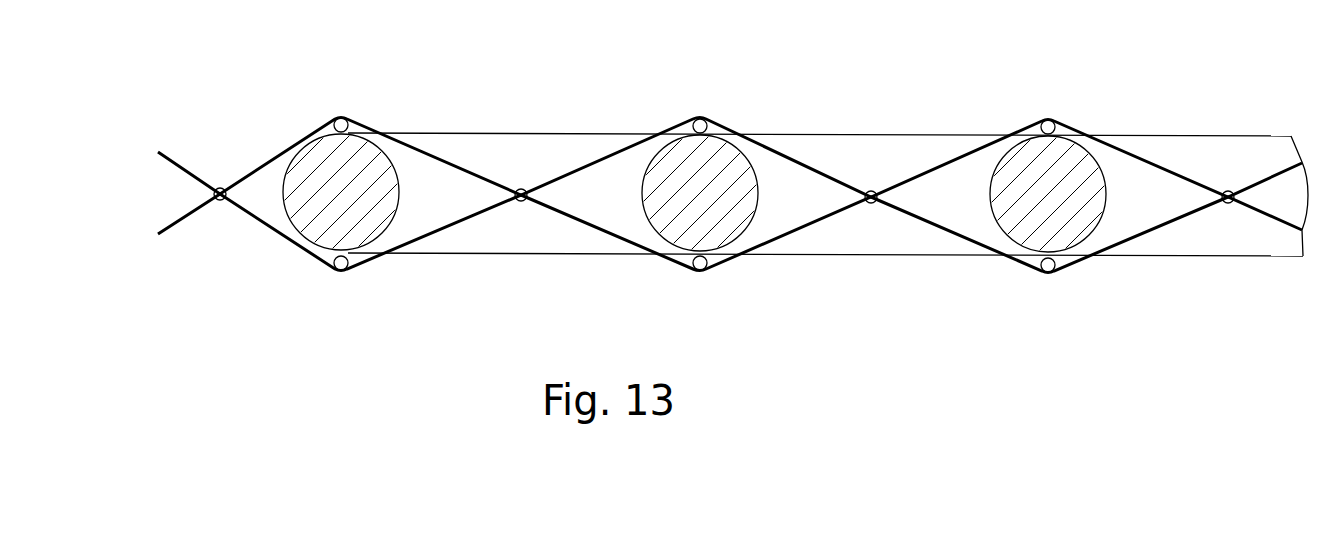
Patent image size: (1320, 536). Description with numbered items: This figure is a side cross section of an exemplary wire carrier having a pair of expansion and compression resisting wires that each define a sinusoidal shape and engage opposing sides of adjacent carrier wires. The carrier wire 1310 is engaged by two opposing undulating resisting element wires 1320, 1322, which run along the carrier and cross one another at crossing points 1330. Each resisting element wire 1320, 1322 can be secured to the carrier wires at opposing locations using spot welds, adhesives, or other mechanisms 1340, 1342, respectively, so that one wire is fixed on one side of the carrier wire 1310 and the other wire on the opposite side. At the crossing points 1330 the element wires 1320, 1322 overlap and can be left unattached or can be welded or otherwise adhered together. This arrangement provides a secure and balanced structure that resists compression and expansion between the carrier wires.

The carrier wire 1310 is at (357, 130).
The resisting element wire 1320 is at (468, 167).
The resisting element wire 1322 is at (440, 228).
The crossing points 1330 is at (220, 201).
The securing mechanisms 1340 is at (345, 119).
The securing mechanisms 1342 is at (697, 118).